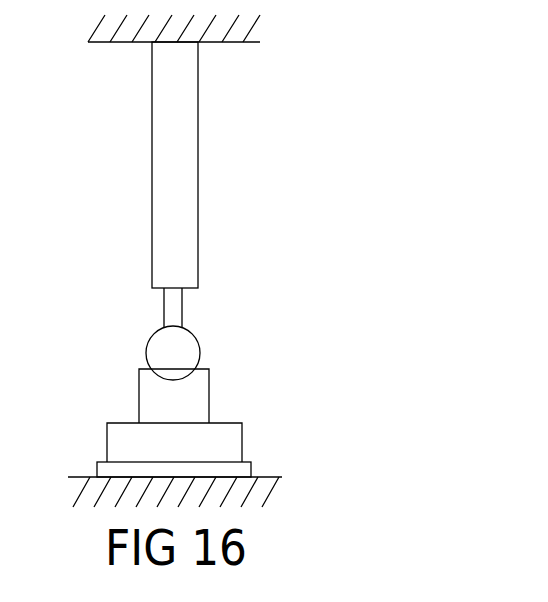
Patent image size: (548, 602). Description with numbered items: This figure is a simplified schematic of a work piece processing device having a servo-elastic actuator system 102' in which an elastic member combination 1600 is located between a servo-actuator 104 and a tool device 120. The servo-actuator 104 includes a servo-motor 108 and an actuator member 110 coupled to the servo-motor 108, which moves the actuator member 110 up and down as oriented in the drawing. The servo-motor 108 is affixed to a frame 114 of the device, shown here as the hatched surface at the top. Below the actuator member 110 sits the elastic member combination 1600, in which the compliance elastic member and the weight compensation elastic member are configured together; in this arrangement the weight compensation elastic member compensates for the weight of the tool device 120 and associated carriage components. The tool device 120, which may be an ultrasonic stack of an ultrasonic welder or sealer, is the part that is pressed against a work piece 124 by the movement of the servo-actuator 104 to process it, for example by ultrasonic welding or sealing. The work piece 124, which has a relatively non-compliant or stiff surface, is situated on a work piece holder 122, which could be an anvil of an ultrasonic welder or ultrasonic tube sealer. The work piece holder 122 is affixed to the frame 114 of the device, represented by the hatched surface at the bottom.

The servo-elastic actuator system 102' is at (310, 49).
The servo-actuator 104 is at (307, 137).
The servo-motor 108 is at (198, 213).
The actuator member 110 is at (177, 304).
The frame 114 is at (87, 44).
The tool device 120 is at (195, 396).
The work piece holder 122 is at (251, 470).
The work piece 124 is at (244, 442).
The elastic member combination 1600 is at (202, 353).